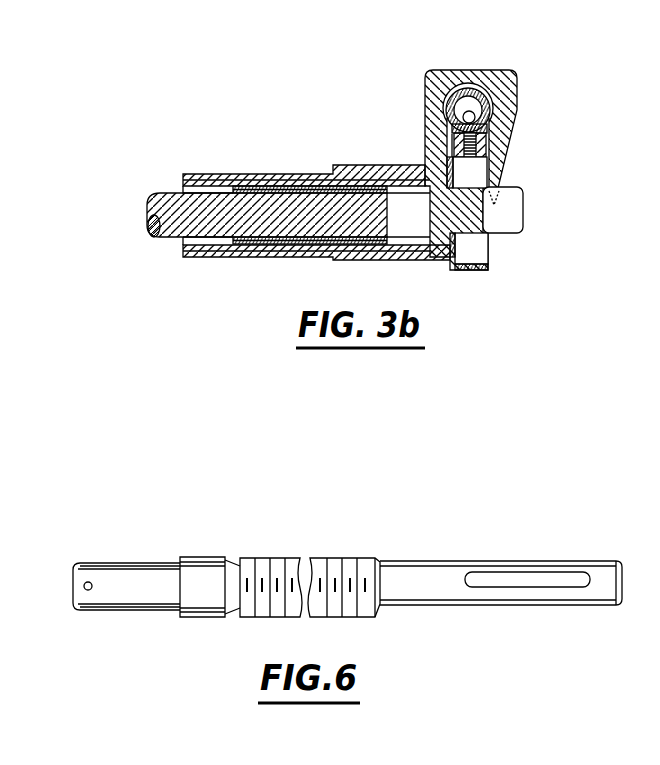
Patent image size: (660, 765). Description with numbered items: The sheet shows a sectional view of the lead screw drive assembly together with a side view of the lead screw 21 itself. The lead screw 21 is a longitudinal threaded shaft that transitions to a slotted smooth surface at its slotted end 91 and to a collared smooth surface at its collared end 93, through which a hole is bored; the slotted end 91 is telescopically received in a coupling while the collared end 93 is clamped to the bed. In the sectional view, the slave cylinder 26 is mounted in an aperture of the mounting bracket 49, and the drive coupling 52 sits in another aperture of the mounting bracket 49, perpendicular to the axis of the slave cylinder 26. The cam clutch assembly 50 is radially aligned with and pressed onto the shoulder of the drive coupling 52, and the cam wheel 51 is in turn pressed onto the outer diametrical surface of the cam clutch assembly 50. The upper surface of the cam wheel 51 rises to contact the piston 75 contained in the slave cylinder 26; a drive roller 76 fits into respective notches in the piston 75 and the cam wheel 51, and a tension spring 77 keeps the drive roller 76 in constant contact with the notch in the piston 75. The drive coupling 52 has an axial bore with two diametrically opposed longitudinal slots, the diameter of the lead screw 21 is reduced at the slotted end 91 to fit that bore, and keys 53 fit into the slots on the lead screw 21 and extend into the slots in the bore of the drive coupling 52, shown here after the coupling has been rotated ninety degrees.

In FIG. 3B, the lead screw 21 is at (150, 203).
In FIG. 6, the lead screw 21 is at (311, 540).
In FIG. 3B, the slave cylinder 26 is at (477, 90).
In FIG. 3B, the mounting bracket 49 is at (510, 82).
In FIG. 3B, the cam clutch assembly 50 is at (470, 178).
In FIG. 3B, the cam wheel 51 is at (452, 140).
In FIG. 3B, the drive coupling 52 is at (238, 189).
In FIG. 3B, the keys 53 is at (281, 189).
In FIG. 3B, the piston 75 is at (486, 110).
In FIG. 3B, the drive roller 76 is at (488, 127).
In FIG. 3B, the tension spring 77 is at (488, 150).
In FIG. 6, the slotted end 91 is at (606, 560).
In FIG. 6, the collared end 93 is at (118, 563).